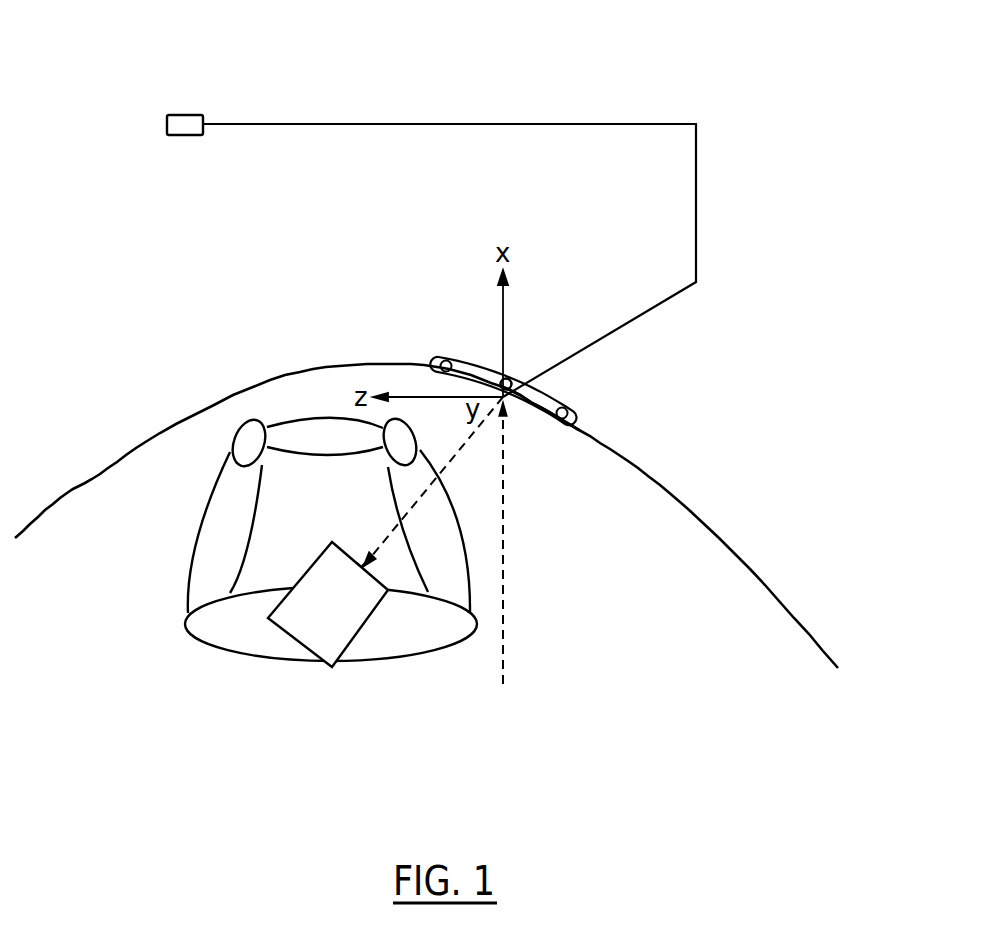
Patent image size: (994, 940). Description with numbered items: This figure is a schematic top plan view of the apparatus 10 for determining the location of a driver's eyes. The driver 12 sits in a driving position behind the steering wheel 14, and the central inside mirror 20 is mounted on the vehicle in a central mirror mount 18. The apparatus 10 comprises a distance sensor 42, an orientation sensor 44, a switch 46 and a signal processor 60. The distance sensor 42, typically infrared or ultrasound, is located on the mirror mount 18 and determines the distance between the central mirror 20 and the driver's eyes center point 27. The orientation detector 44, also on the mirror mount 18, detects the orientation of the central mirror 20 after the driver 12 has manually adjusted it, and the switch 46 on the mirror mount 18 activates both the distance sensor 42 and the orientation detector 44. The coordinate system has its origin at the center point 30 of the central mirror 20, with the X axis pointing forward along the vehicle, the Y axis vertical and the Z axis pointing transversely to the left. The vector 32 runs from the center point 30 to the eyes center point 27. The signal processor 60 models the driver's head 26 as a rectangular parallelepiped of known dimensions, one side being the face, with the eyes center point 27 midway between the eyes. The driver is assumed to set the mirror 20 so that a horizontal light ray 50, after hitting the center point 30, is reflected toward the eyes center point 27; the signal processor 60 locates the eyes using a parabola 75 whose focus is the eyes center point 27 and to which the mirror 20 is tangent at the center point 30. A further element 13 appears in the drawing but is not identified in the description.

The apparatus 10 is at (342, 82).
The driver 12 is at (203, 647).
The headrest supports 13 is at (241, 421).
The steering wheel 14 is at (297, 455).
The central mirror mount 18 is at (443, 362).
The central inside mirror 20 is at (533, 410).
The driver's head 26 is at (374, 623).
The driver's eyes center point 27 is at (361, 562).
The center point 30 is at (533, 388).
The vector 32 is at (415, 501).
The distance sensor 42 is at (513, 380).
The orientation sensor 44 is at (506, 384).
The switch 46 is at (570, 414).
The light ray 50 is at (505, 663).
The signal processor 60 is at (172, 113).
The parabola 75 is at (752, 568).